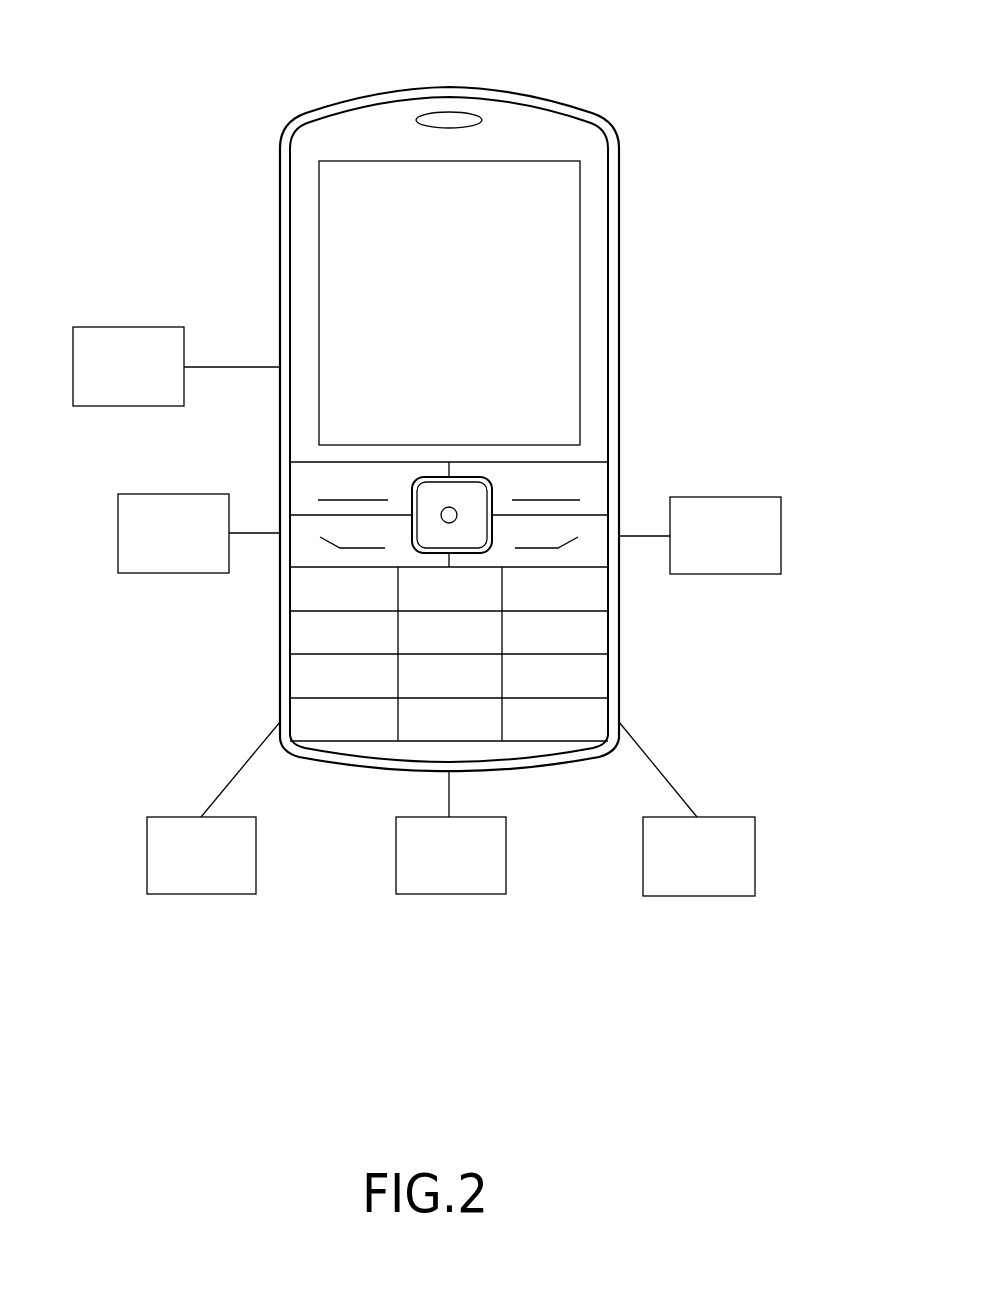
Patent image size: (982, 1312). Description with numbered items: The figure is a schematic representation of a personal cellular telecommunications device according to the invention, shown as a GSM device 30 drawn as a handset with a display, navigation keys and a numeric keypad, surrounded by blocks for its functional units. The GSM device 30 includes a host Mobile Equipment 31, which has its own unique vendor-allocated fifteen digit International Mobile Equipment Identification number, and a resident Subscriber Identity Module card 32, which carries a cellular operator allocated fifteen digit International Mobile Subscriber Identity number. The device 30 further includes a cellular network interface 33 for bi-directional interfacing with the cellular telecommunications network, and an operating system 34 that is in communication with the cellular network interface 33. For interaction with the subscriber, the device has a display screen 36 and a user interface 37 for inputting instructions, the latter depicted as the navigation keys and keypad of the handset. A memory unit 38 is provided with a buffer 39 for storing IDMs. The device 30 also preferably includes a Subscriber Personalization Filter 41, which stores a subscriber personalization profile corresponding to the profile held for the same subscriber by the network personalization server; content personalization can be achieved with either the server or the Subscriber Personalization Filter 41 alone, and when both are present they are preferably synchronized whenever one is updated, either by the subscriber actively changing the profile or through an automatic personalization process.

The GSM device 30 is at (755, 148).
The host Mobile Equipment 31 is at (401, 88).
The Subscriber Identity Module card 32 is at (153, 327).
The cellular network interface 33 is at (781, 542).
The operating system 34 is at (118, 541).
The display screen 36 is at (350, 231).
The user interface 37 is at (571, 481).
The memory unit 38 is at (201, 895).
The buffer 39 is at (449, 895).
The Subscriber Personalization Filter 41 is at (700, 896).